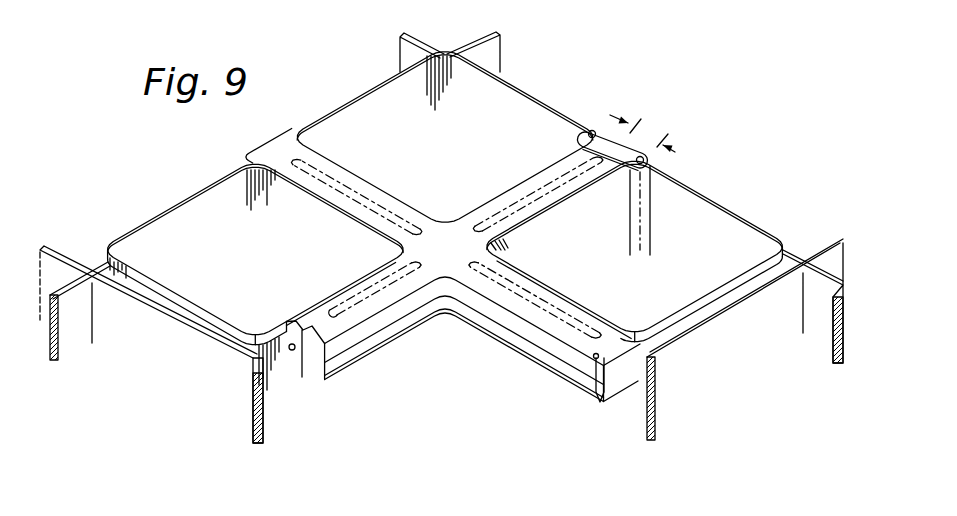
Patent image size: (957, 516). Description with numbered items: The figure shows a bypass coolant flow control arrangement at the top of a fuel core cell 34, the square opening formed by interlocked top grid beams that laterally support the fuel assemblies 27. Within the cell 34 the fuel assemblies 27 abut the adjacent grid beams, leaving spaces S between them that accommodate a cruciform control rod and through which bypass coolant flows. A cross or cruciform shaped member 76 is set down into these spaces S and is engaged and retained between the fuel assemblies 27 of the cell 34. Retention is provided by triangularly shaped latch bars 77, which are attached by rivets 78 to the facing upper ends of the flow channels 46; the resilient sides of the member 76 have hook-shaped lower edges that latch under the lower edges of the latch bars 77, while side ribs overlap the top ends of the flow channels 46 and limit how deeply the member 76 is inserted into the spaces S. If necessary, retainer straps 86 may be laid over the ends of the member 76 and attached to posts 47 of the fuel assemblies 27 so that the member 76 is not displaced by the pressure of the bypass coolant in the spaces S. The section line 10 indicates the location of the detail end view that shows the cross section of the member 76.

The fuel assembly 27 is at (480, 87).
The flow channel 46 is at (178, 208).
The cell 34 is at (737, 108).
The retainer strap 86 is at (592, 131).
The post 47 is at (630, 235).
The section line 10 is at (312, 283).
The cross or cruciform shaped member 76 is at (440, 278).
The latch bar 77 is at (290, 369).
The rivet 78 is at (291, 351).
The space S is at (642, 133).